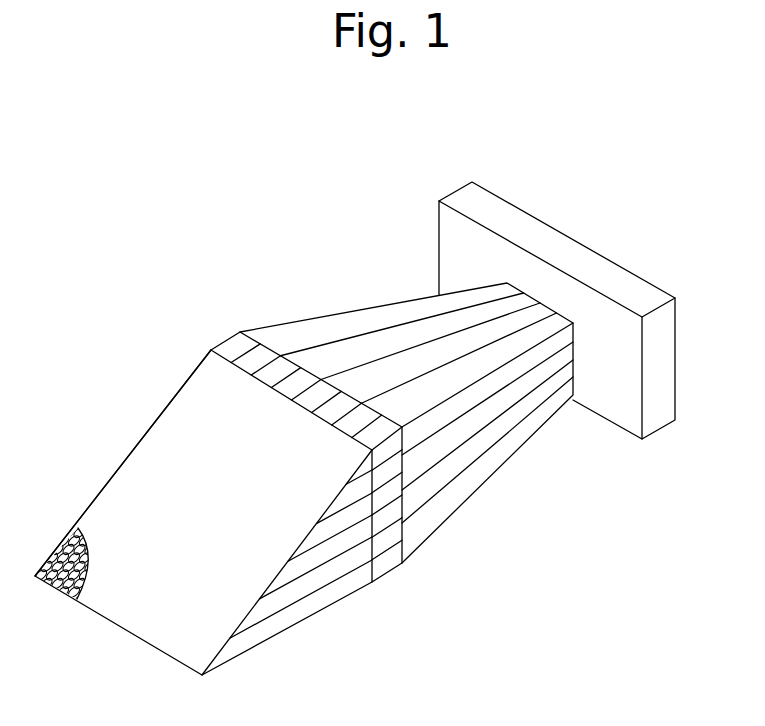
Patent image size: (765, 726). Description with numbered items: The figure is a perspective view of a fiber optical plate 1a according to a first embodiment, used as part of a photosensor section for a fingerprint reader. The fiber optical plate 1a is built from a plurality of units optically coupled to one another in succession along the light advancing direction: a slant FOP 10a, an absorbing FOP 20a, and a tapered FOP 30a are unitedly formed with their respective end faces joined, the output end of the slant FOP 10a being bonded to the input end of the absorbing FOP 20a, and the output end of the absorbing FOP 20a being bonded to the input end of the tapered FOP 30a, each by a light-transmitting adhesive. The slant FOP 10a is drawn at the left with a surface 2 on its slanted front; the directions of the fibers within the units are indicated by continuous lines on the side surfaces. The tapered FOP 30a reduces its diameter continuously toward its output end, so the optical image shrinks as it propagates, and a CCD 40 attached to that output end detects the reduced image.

The fiber optical plate 1a is at (358, 225).
The light incident surface of fiber optic plate 2 is at (147, 443).
The slant FOP 10a is at (210, 512).
The absorbing FOP 20a is at (229, 336).
The tapered FOP 30a is at (512, 438).
The CCD 40 is at (648, 296).